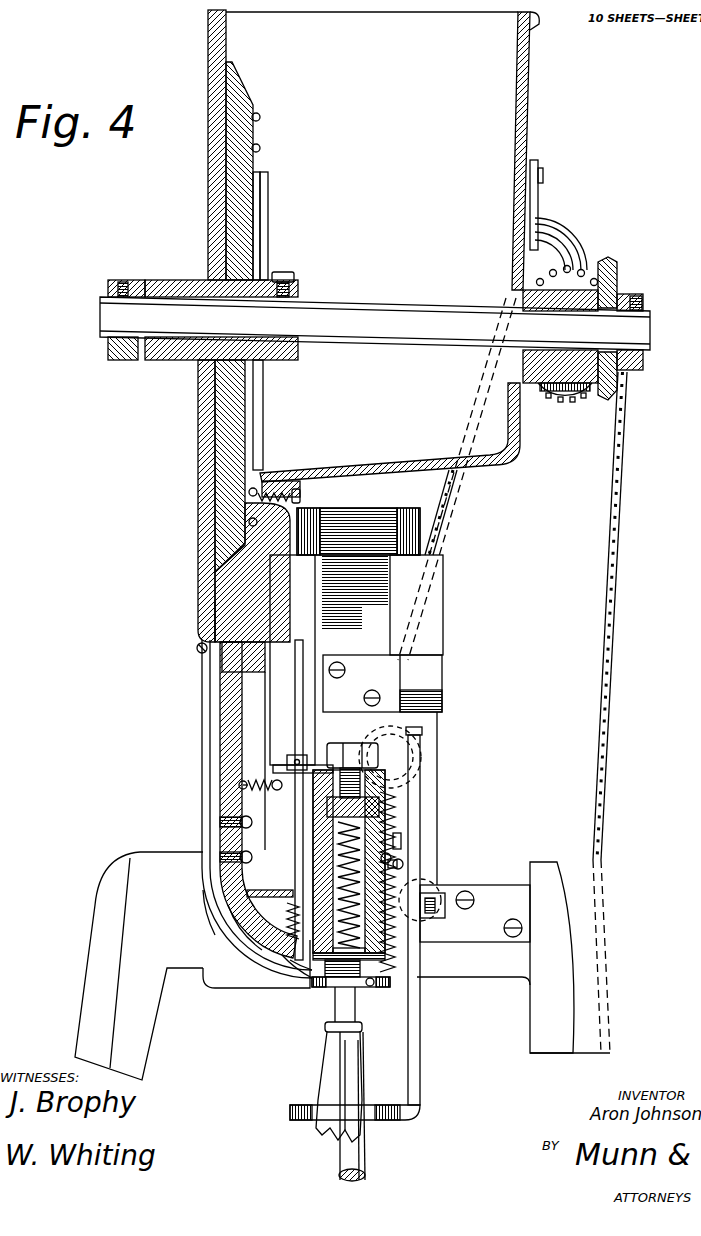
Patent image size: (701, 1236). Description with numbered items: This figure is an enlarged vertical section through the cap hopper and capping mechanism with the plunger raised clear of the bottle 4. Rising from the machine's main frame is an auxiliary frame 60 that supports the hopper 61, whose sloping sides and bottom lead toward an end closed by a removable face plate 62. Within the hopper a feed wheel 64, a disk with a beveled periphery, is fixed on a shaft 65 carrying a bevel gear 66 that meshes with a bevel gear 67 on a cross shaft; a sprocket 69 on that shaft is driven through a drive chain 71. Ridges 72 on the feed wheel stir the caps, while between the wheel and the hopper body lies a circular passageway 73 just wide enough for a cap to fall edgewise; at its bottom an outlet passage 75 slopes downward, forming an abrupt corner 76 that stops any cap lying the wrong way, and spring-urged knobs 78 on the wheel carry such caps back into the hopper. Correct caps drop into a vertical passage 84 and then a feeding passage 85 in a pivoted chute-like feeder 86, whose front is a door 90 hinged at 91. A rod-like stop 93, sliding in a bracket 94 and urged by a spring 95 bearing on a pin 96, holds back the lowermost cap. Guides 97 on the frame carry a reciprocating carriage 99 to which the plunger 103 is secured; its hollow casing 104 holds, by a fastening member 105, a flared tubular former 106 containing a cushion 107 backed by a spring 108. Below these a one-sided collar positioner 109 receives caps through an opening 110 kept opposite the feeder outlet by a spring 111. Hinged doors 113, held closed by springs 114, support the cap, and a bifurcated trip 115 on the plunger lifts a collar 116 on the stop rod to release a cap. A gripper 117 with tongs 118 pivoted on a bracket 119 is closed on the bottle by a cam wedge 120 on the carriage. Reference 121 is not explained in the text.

The bottle 4 is at (330, 1126).
The auxiliary frame 60 is at (546, 871).
The hopper 61 is at (522, 160).
The removable face plate 62 is at (202, 468).
The feed wheel 64 is at (268, 196).
The shaft 65 is at (390, 312).
The bevel gear 66 is at (616, 290).
The bevel gear 67 is at (566, 392).
The sprocket 69 is at (548, 392).
The drive chain 71 is at (606, 532).
The ribs or ridges 72 is at (264, 242).
The passageway 73 is at (282, 490).
The outlet passage 75 is at (205, 598).
The corner or angle 76 is at (262, 548).
The knobs or buttons 78 is at (259, 121).
The vertically-extending passage 84 is at (198, 650).
The feeding passage 85 is at (206, 742).
The feeder 86 is at (222, 718).
The door 90 is at (205, 800).
The hinge 91 is at (204, 655).
The stop 93 is at (286, 890).
The bracket 94 is at (208, 906).
The spring 95 is at (287, 916).
The pin 96 is at (262, 958).
The guides 97 is at (294, 996).
The carriage 99 is at (414, 514).
The plunger 103 is at (386, 798).
The hollow casing 104 is at (362, 840).
The fastening member 105 is at (423, 740).
The former 106 is at (386, 853).
The cushion 107 is at (404, 866).
The spring 108 is at (376, 812).
The positioner 109 is at (392, 986).
The opening 110 is at (330, 980).
The spring 111 is at (257, 780).
The doors 113 is at (371, 986).
The springs 114 is at (394, 946).
The trip 115 is at (345, 746).
The collar 116 is at (289, 757).
The gripper 117 is at (412, 1069).
The tongs 118 is at (411, 1110).
The bracket 119 is at (447, 886).
The cam wedge 120 is at (441, 688).
The lever 121 is at (402, 840).